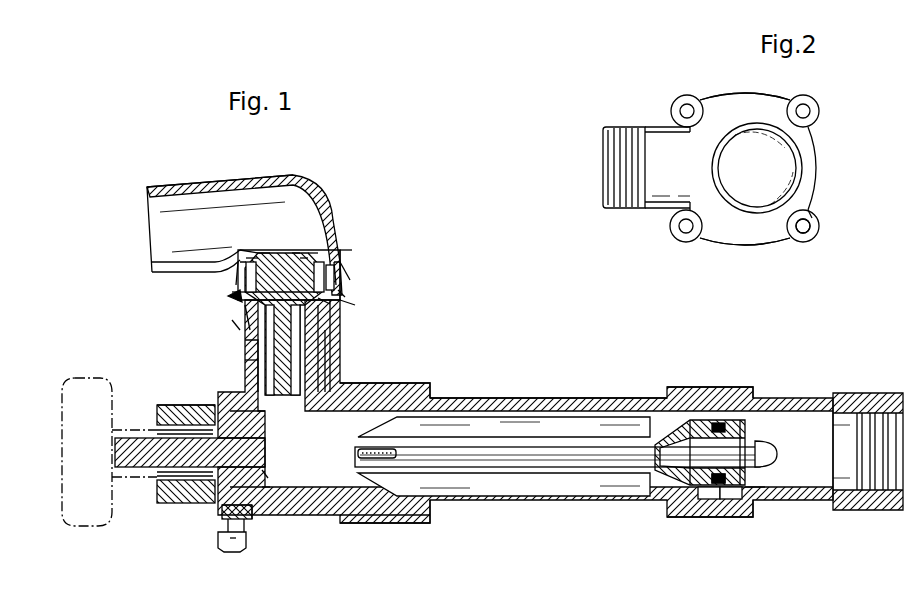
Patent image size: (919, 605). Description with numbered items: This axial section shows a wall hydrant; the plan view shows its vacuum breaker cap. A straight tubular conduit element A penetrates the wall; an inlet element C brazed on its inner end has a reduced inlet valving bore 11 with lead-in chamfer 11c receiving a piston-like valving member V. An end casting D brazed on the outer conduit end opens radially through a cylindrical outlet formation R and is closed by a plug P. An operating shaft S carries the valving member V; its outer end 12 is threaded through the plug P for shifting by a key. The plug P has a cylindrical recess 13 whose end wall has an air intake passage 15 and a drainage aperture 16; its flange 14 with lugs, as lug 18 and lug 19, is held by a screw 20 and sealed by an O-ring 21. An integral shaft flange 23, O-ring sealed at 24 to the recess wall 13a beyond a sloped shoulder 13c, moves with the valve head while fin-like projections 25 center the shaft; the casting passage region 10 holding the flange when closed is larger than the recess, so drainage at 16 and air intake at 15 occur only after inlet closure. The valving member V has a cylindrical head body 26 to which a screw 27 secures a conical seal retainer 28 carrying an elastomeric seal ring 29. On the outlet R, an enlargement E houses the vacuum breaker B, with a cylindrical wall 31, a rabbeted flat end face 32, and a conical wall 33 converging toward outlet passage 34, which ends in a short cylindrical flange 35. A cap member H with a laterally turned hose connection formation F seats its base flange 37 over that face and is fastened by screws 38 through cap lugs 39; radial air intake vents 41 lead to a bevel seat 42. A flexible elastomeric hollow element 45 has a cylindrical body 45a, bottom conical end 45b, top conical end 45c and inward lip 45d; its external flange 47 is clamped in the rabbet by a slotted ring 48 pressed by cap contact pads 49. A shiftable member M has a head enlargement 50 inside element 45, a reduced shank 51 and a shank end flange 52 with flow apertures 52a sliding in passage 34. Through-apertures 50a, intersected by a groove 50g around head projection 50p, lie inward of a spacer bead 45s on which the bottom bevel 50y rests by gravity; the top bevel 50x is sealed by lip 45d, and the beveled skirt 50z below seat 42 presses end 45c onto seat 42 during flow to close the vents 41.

In FIG. 1, the passage region 10 is at (358, 508).
In FIG. 1, the inlet valving bore 11 is at (867, 451).
In FIG. 1, the bore lead-in chamfer 11c is at (760, 487).
In FIG. 1, the shaft outer end 12 is at (160, 482).
In FIG. 1, the cylindrical recess 13 is at (332, 516).
In FIG. 1, the recess wall 13a is at (272, 488).
In FIG. 1, the sloped shoulder 13c is at (263, 470).
In FIG. 1, the flange 14 is at (222, 512).
In FIG. 1, the air intake passage 15 is at (215, 405).
In FIG. 1, the drainage aperture 16 is at (222, 505).
In FIG. 1, the lug 18 is at (225, 549).
In FIG. 1, the lug 19 is at (236, 549).
In FIG. 1, the screw 20 is at (222, 532).
In FIG. 1, the O ring 21 is at (244, 522).
In FIG. 1, the shaft flange 23 is at (266, 468).
In FIG. 1, the O ring seal 24 is at (262, 518).
In FIG. 1, the fin-like projections 25 is at (504, 456).
In FIG. 1, the head body 26 is at (710, 500).
In FIG. 1, the screw 27 is at (770, 448).
In FIG. 1, the seal retainer element 28 is at (760, 470).
In FIG. 1, the seal ring 29 is at (730, 500).
In FIG. 1, the cylindrical wall 31 is at (355, 305).
In FIG. 1, the end face 32 is at (350, 280).
In FIG. 1, the conical wall 33 is at (338, 320).
In FIG. 1, the outlet passage 34 is at (326, 348).
In FIG. 1, the cylindrical flange 35 is at (320, 340).
In FIG. 1, the base flange 37 is at (352, 248).
In FIG. 2, the base flange 37 is at (812, 170).
In FIG. 2, the screws 38 is at (811, 225).
In FIG. 2, the cap lugs 39 is at (808, 212).
In FIG. 1, the air intake vents 41 is at (236, 263).
In FIG. 1, the vent seal seat 42 is at (240, 262).
In FIG. 1, the elastomeric hollow element 45 is at (293, 247).
In FIG. 1, the cylindrical body portion 45a is at (244, 284).
In FIG. 1, the bottom end portion 45b is at (250, 330).
In FIG. 1, the top end portion 45c is at (250, 255).
In FIG. 1, the inward lip portion 45d is at (264, 253).
In FIG. 1, the spacer bead convexity 45s is at (234, 300).
In FIG. 1, the flange 47 is at (326, 281).
In FIG. 1, the ring 48 is at (332, 270).
In FIG. 1, the contact pads 49 is at (336, 262).
In FIG. 1, the head enlargement 50 is at (283, 324).
In FIG. 1, the through-apertures 50a is at (322, 300).
In FIG. 1, the groove 50g is at (345, 296).
In FIG. 1, the head projection 50p is at (318, 255).
In FIG. 1, the top end bevel 50x is at (314, 250).
In FIG. 1, the bottom bevel 50y is at (236, 294).
In FIG. 1, the peripheral bevel 50z is at (248, 260).
In FIG. 1, the reduced shank 51 is at (250, 360).
In FIG. 1, the shank end flange 52 is at (328, 362).
In FIG. 1, the flow apertures 52a is at (328, 382).
In FIG. 1, the tubular conduit element A is at (640, 398).
In FIG. 1, the vacuum breaker and air intake device B is at (406, 249).
In FIG. 2, the vacuum breaker and air intake device B is at (752, 257).
In FIG. 1, the piping connection inlet element C is at (758, 386).
In FIG. 1, the end element casting D is at (428, 383).
In FIG. 1, the enlargement E is at (232, 325).
In FIG. 1, the hose connection formation F is at (208, 185).
In FIG. 2, the hose connection formation F is at (660, 127).
In FIG. 1, the cap member H is at (266, 152).
In FIG. 2, the cap member H is at (733, 104).
In FIG. 1, the shiftable member M is at (299, 228).
In FIG. 1, the closure plug P is at (158, 405).
In FIG. 1, the outlet formation R is at (242, 360).
In FIG. 1, the operating shaft S is at (572, 446).
In FIG. 1, the valving member V is at (672, 420).